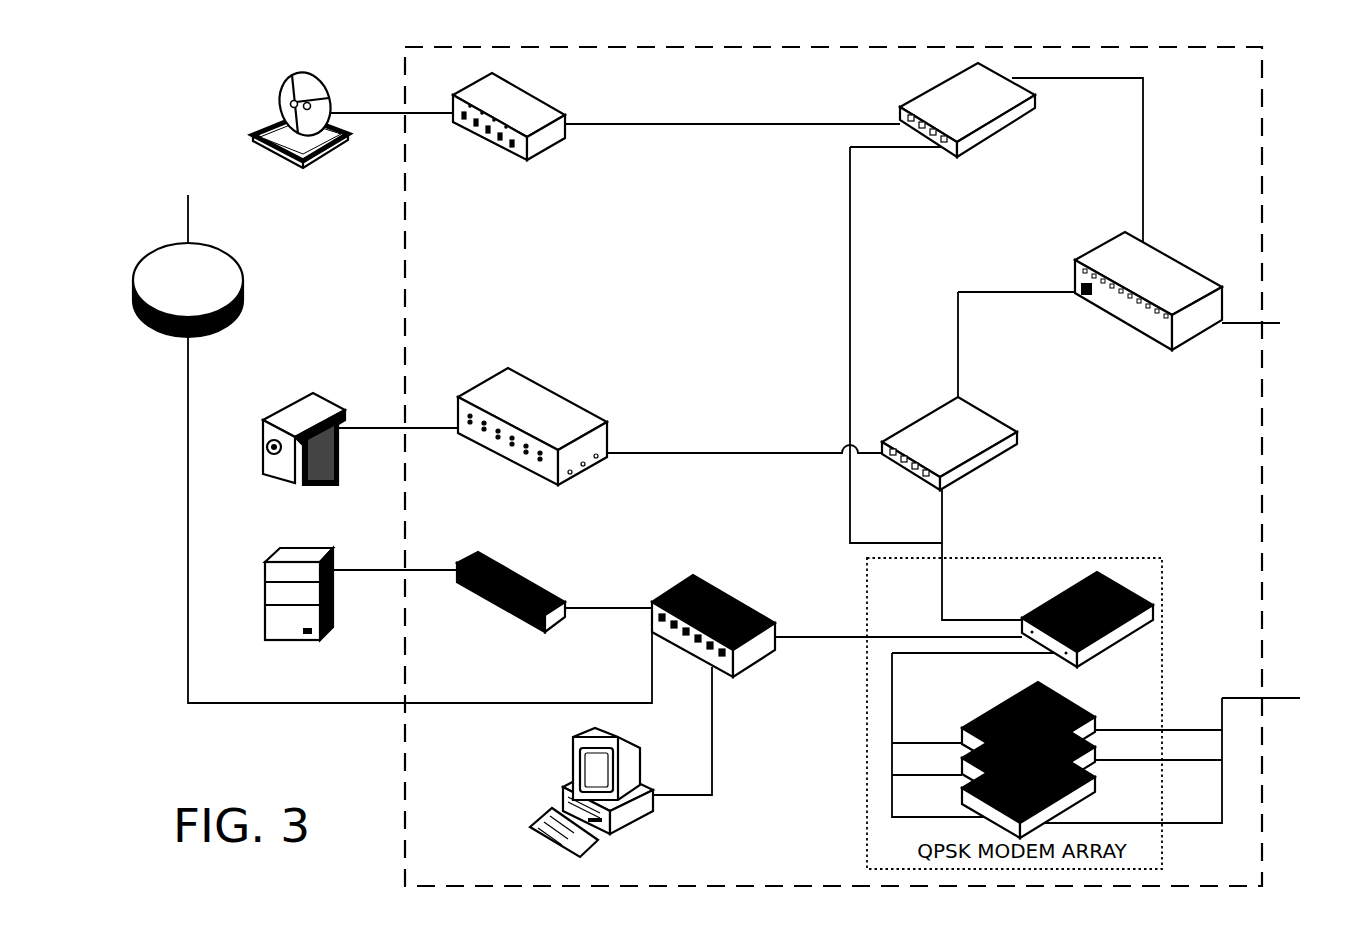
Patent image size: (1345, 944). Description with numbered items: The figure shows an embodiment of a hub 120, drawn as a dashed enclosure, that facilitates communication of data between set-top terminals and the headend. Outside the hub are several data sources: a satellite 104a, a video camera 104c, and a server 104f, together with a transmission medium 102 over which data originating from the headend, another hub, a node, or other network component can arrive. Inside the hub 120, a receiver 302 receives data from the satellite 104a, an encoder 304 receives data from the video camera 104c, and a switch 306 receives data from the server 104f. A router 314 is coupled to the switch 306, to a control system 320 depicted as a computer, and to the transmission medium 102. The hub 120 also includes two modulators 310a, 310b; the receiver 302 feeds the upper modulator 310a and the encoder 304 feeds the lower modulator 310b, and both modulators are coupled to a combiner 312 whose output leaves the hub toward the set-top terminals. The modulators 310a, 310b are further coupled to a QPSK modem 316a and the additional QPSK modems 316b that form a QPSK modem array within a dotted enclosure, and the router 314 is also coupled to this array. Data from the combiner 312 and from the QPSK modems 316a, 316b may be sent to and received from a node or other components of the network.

The transmission medium 102 is at (187, 290).
The satellite 104a is at (256, 131).
The video camera 104c is at (283, 408).
The server 104f is at (267, 557).
The hub 120 is at (392, 781).
The receiver 302 is at (537, 100).
The encoder 304 is at (547, 390).
The switch 306 is at (535, 583).
The modulator 310a is at (915, 97).
The modulator 310b is at (995, 415).
The combiner 312 is at (1167, 253).
The router 314 is at (778, 622).
The QPSK modem 316a is at (1037, 603).
The QPSK modems 316b is at (984, 696).
The control system 320 is at (632, 747).